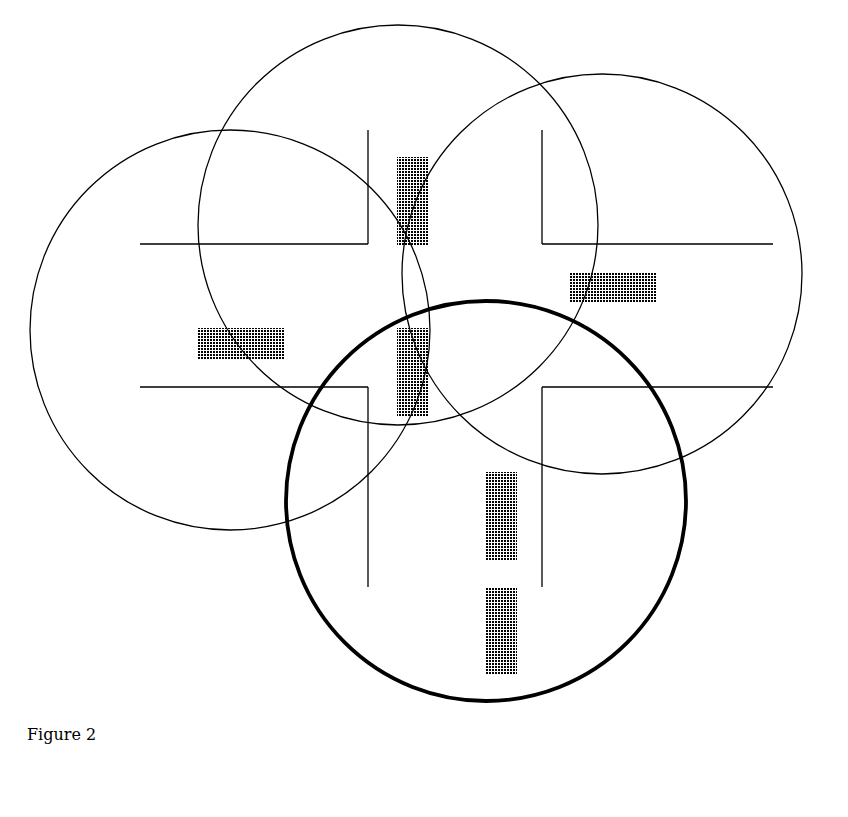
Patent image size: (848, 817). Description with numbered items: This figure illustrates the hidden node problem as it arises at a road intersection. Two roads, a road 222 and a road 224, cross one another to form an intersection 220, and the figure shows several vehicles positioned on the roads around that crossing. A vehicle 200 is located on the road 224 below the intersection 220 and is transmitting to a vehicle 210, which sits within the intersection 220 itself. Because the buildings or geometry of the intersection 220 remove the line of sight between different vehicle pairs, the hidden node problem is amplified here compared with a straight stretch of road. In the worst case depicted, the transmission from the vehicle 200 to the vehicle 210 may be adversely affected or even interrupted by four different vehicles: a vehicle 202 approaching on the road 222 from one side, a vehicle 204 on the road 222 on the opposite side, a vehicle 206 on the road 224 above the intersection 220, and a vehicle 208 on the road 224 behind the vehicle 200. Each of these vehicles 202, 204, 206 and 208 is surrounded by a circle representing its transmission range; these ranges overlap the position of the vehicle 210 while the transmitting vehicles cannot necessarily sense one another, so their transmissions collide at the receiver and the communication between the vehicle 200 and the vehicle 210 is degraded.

The vehicle 200 is at (515, 516).
The vehicle 202 is at (241, 344).
The vehicle 204 is at (613, 287).
The vehicle 206 is at (426, 201).
The vehicle 208 is at (515, 631).
The vehicle 210 is at (426, 372).
The intersection 220 is at (455, 315).
The road 222 is at (432, 315).
The road 224 is at (455, 358).